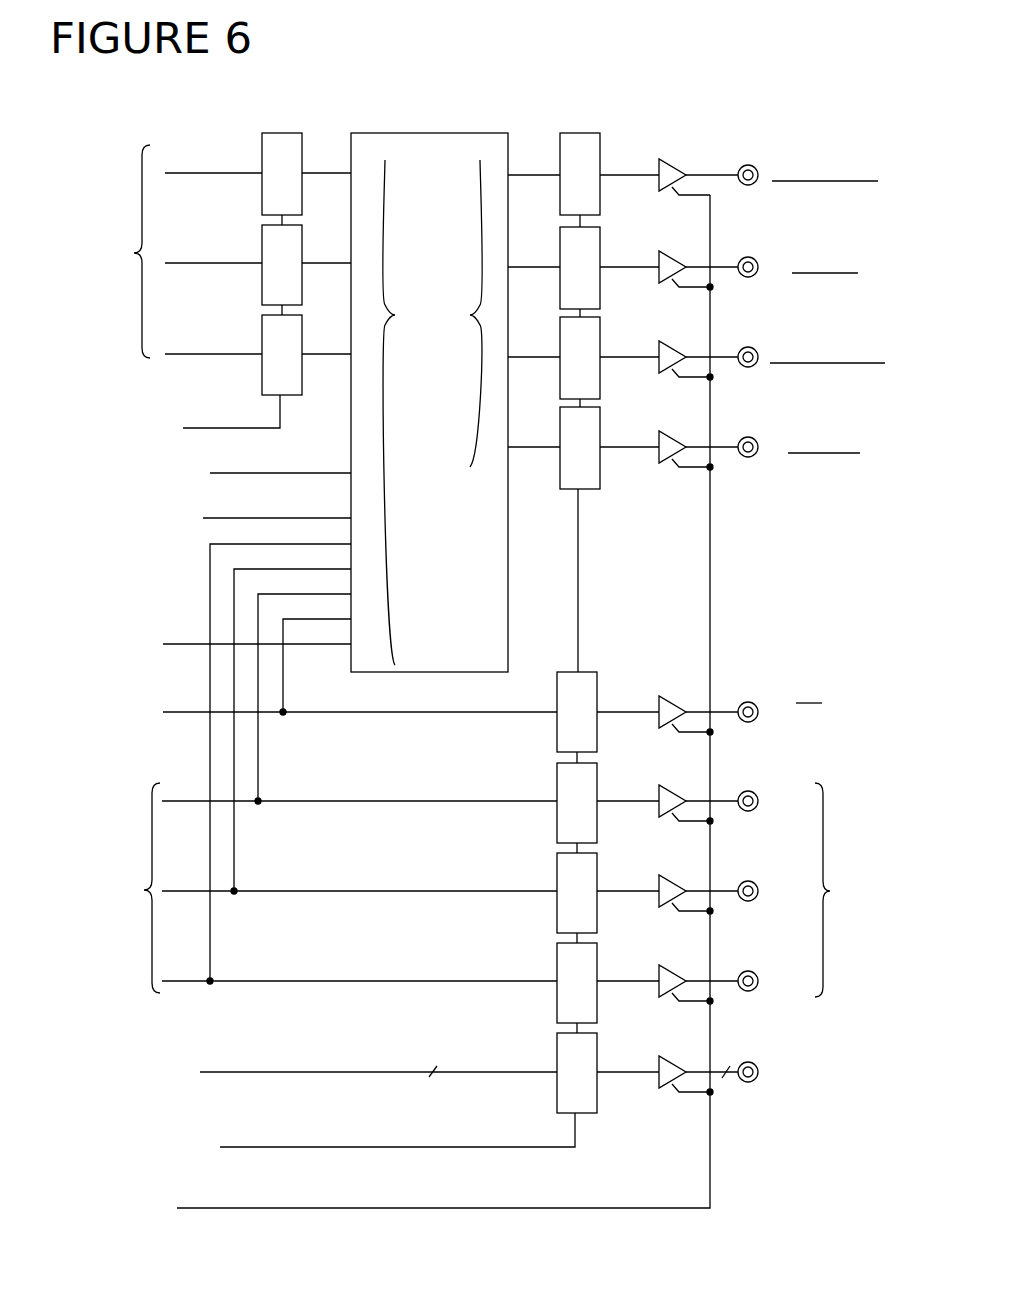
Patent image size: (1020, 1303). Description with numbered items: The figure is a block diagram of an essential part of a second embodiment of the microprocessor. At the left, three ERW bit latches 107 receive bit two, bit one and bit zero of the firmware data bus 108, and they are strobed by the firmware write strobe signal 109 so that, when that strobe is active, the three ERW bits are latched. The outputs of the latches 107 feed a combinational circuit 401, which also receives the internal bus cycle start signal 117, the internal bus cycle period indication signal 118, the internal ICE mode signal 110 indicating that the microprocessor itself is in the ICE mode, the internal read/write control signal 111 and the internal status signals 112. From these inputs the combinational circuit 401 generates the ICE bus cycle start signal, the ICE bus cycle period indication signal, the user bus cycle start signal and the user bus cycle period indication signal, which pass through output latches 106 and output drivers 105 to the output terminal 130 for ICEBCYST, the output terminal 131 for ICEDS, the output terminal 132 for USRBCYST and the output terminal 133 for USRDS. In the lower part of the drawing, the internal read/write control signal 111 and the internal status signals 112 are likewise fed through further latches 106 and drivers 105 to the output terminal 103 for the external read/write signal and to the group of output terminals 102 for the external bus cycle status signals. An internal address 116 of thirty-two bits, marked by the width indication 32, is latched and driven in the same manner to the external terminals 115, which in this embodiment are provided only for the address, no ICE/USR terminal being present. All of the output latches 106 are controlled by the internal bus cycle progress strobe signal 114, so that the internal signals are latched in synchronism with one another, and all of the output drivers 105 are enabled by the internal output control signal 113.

The ERW bit latches 107 is at (270, 133).
The combinational circuit 401 is at (480, 133).
The output latches 106 is at (577, 133).
The output drivers 105 is at (665, 162).
The output terminal for ICE bus cycle start signal 130 is at (759, 174).
The output terminal for ICE bus cycle period indication signal 131 is at (759, 266).
The output terminal for user bus cycle start signal 132 is at (759, 356).
The output terminal for user bus cycle period indication signal 133 is at (759, 446).
The output terminal 103 is at (753, 700).
The group of output terminals 102 is at (778, 890).
The external terminals 115 is at (752, 1061).
The 32-bit bus width 32 is at (578, 1057).
The firmware data bus 108 is at (199, 251).
The firmware write strobe signal 109 is at (151, 403).
The internal bus cycle start signal 117 is at (185, 477).
The internal bus cycle period indication signal 118 is at (185, 741).
The internal ICE mode signal 110 is at (185, 638).
The internal read/write control signal 111 is at (288, 714).
The internal status signals 112 is at (287, 888).
The internal address 116 is at (286, 1079).
The internal bus cycle progress strobe signal 114 is at (295, 1148).
The internal output control signal 113 is at (362, 723).